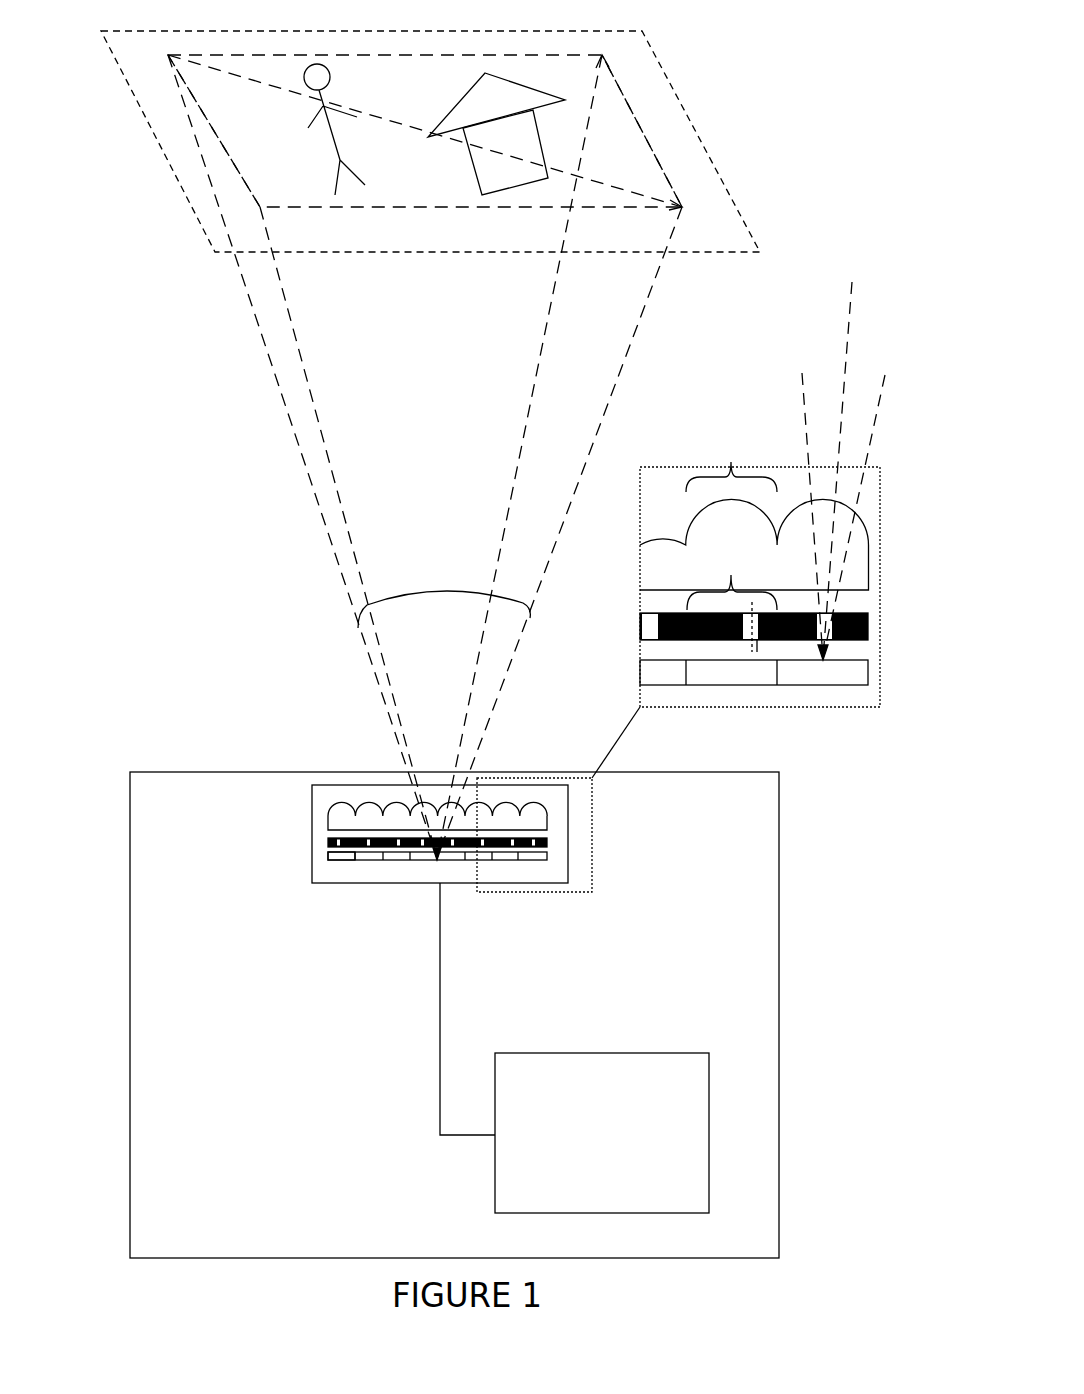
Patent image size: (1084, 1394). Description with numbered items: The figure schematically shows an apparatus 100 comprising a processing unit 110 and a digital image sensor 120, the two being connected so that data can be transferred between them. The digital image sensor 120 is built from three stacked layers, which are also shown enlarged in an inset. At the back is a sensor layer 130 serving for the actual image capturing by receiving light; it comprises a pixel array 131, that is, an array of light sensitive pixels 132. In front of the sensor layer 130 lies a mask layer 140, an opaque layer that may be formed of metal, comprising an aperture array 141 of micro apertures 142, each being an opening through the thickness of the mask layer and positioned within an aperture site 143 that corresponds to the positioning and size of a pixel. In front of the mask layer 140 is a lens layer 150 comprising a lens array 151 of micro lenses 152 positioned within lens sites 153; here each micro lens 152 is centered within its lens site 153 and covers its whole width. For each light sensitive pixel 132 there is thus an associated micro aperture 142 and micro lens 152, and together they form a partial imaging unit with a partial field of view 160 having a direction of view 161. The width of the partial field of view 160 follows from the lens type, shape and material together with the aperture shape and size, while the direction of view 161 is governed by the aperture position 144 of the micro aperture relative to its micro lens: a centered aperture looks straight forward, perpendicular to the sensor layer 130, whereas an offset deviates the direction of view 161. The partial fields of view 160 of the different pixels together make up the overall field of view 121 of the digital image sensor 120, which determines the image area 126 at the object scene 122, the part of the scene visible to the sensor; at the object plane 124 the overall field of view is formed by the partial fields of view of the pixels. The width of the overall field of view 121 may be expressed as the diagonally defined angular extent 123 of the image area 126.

The apparatus 100 is at (779, 1015).
The processing unit 110 is at (688, 1204).
The digital image sensor 120 is at (368, 883).
The overall field of view 121 is at (278, 380).
The object scene 122 is at (575, 72).
The angular extent 123 is at (403, 592).
The object plane 124 is at (722, 172).
The image area 126 is at (635, 117).
The sensor layer 130 is at (325, 863).
The pixel array 131 is at (342, 860).
The light sensitive pixel 132 is at (747, 678).
The mask layer 140 is at (322, 846).
The aperture array 141 is at (329, 852).
The micro aperture 142 is at (748, 617).
The aperture site 143 is at (754, 595).
The aperture position 144 is at (757, 646).
The lens layer 150 is at (322, 826).
The lens array 151 is at (338, 826).
The micro lens 152 is at (727, 523).
The lens site 153 is at (731, 463).
The partial field of view 160 is at (802, 385).
The direction of view 161 is at (847, 332).